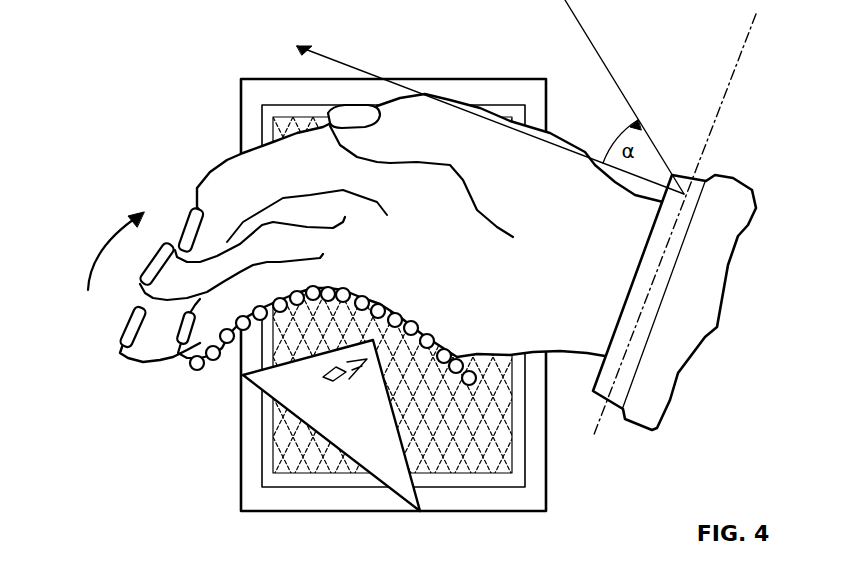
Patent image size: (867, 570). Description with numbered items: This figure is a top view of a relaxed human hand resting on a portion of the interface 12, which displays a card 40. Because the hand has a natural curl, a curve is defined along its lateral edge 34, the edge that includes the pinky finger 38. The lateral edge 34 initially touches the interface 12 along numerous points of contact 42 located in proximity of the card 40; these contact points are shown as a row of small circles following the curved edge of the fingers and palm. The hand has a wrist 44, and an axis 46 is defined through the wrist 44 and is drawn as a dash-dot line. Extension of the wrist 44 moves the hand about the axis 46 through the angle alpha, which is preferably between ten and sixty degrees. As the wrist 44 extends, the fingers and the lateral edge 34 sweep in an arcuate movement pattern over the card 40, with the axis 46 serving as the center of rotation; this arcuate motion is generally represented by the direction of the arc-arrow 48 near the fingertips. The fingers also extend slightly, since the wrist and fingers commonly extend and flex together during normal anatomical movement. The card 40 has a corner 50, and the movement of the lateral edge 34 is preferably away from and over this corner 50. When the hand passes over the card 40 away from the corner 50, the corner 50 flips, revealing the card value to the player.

The interface 12 is at (168, 107).
The lateral edge 34 is at (492, 343).
The pinky finger 38 is at (389, 212).
The card 40 is at (452, 92).
The points of contact 42 is at (562, 453).
The wrist 44 is at (703, 177).
The axis 46 is at (728, 90).
The arc-arrow 48 is at (88, 262).
The corner 50 is at (368, 387).